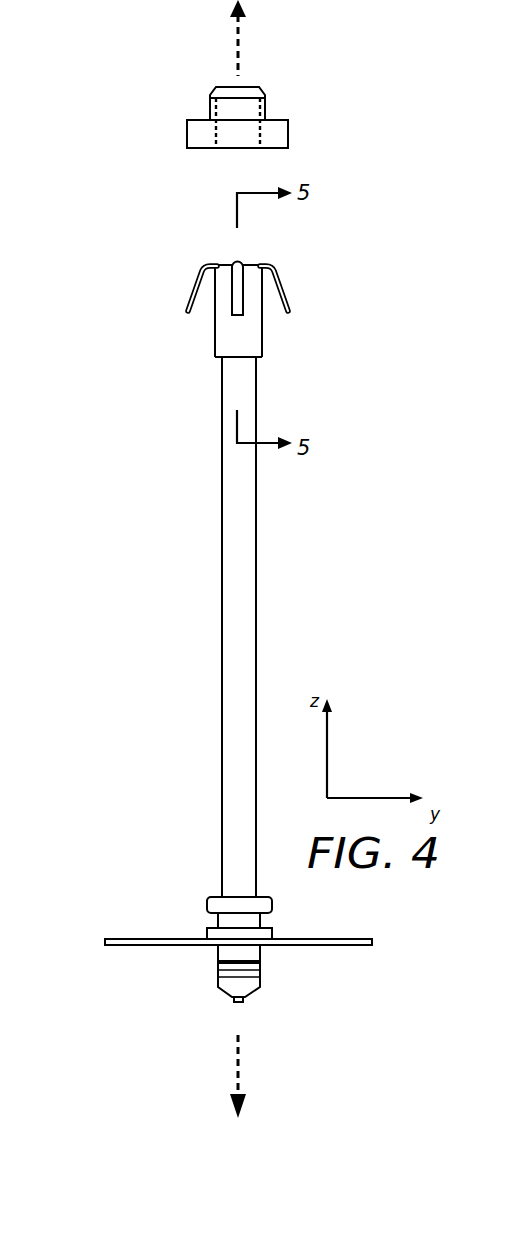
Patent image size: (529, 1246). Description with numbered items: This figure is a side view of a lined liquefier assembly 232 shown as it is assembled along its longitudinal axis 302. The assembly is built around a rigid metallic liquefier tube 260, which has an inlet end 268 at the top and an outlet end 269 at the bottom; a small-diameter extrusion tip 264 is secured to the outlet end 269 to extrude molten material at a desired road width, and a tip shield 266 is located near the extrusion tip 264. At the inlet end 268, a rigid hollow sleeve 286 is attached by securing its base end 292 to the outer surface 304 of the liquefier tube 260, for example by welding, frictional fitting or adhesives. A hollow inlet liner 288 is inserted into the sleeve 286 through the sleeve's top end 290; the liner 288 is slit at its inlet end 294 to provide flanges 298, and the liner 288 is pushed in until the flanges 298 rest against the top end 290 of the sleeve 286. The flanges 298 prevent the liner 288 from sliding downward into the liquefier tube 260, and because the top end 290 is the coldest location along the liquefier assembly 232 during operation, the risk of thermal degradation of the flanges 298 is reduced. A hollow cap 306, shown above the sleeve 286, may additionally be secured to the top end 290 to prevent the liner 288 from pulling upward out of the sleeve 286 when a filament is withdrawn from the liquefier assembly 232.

The liquefier assembly 232 is at (132, 676).
The liquefier tube 260 is at (212, 548).
The extrusion tip 264 is at (248, 988).
The tip shield 266 is at (120, 946).
The inlet end 268 is at (212, 369).
The outlet end 269 is at (191, 926).
The sleeve 286 is at (205, 328).
The liner 288 is at (301, 303).
The top end 290 is at (216, 258).
The base end 292 is at (260, 371).
The inlet end 294 is at (262, 243).
The flanges 298 is at (199, 285).
The longitudinal axis 302 is at (238, 60).
The outer surface 304 is at (250, 543).
The hollow cap 306 is at (188, 125).